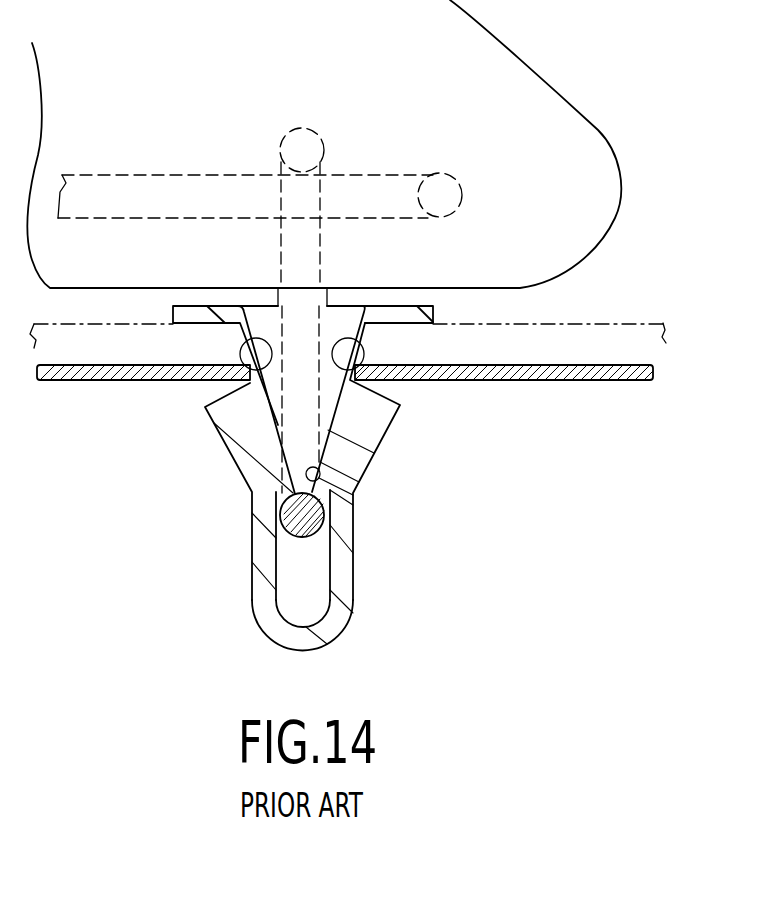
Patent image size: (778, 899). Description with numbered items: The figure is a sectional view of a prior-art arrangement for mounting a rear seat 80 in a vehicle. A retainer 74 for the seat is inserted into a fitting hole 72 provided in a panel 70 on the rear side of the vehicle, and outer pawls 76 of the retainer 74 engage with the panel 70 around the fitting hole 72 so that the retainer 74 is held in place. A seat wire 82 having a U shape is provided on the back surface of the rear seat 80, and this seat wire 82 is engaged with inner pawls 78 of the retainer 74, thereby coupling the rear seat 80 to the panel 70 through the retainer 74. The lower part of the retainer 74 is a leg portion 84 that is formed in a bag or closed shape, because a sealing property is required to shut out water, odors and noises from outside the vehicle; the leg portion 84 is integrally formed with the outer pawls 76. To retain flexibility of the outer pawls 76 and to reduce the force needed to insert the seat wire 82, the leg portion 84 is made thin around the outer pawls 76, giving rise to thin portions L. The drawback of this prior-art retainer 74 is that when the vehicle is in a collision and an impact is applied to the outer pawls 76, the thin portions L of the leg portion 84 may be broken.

The panel 70 is at (603, 380).
The fitting hole 72 is at (243, 340).
The retainer for the seat 74 is at (323, 478).
The outer pawls 76 is at (388, 422).
The inner pawls 78 is at (353, 495).
The rear seat 80 is at (605, 154).
The seat wire 82 is at (323, 328).
The leg portion 84 is at (352, 582).
The thin portions L is at (365, 339).